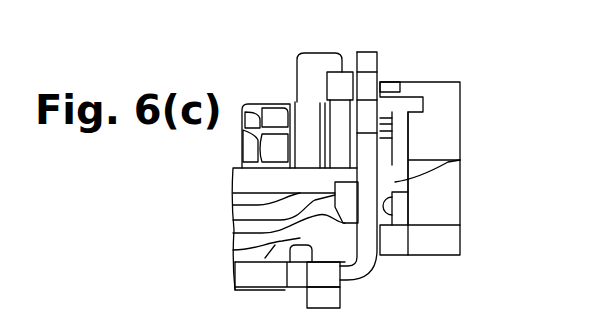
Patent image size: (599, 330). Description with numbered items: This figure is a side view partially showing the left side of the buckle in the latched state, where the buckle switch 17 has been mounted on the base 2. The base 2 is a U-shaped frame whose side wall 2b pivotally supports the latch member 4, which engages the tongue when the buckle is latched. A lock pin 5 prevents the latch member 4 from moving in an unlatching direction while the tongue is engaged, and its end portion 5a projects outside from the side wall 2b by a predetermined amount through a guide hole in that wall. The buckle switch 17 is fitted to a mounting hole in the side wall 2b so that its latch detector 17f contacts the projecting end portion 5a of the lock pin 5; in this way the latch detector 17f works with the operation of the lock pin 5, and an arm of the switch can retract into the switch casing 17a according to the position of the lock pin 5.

The base 2 is at (368, 273).
The side wall 2b is at (371, 60).
The latch member 4 is at (233, 267).
The lock pin 5 is at (265, 183).
The end portion 5a is at (395, 182).
The buckle switch 17 is at (460, 187).
The switch casing 17a is at (447, 118).
The latch detector 17f is at (400, 135).